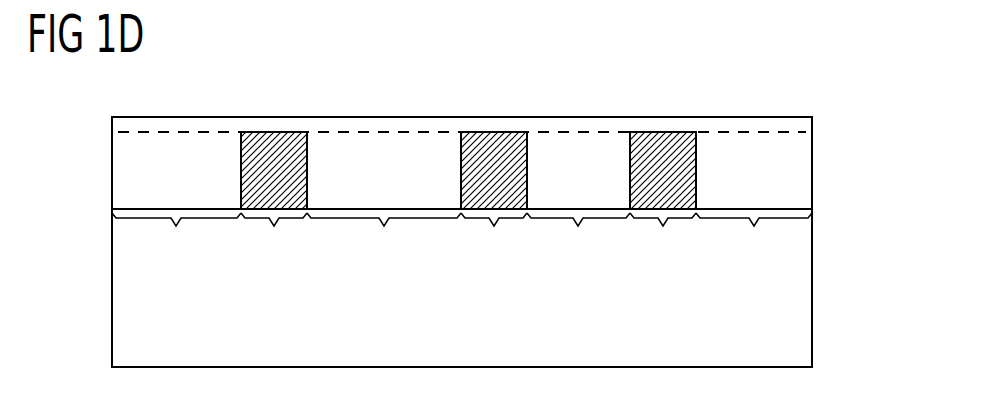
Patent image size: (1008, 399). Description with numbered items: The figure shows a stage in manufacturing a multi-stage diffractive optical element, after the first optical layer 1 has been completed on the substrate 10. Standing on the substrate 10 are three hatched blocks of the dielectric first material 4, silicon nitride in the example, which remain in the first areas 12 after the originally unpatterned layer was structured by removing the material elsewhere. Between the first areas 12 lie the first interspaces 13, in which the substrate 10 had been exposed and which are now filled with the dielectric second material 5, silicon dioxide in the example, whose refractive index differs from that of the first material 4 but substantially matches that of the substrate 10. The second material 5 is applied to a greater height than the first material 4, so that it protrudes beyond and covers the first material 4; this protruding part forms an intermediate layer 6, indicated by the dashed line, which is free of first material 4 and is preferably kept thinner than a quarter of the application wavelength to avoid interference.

The first optical layer 1 is at (100, 160).
The first material 4 is at (272, 137).
The second material 5 is at (803, 172).
The intermediate layer 6 is at (805, 126).
The substrate 10 is at (803, 289).
The first areas 12 is at (468, 238).
The first interspaces 13 is at (462, 238).